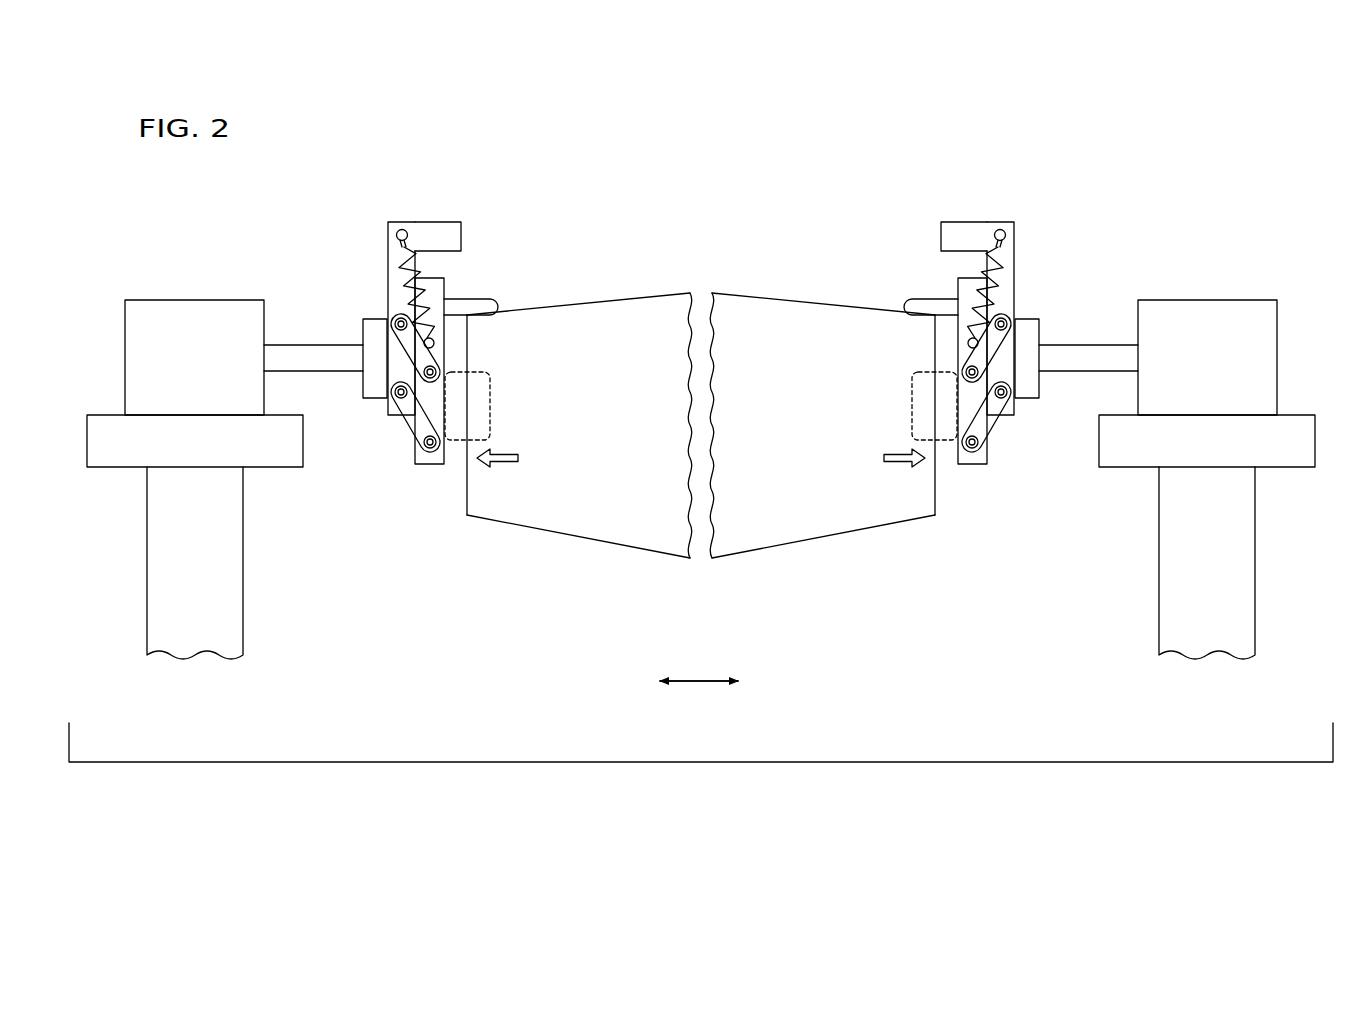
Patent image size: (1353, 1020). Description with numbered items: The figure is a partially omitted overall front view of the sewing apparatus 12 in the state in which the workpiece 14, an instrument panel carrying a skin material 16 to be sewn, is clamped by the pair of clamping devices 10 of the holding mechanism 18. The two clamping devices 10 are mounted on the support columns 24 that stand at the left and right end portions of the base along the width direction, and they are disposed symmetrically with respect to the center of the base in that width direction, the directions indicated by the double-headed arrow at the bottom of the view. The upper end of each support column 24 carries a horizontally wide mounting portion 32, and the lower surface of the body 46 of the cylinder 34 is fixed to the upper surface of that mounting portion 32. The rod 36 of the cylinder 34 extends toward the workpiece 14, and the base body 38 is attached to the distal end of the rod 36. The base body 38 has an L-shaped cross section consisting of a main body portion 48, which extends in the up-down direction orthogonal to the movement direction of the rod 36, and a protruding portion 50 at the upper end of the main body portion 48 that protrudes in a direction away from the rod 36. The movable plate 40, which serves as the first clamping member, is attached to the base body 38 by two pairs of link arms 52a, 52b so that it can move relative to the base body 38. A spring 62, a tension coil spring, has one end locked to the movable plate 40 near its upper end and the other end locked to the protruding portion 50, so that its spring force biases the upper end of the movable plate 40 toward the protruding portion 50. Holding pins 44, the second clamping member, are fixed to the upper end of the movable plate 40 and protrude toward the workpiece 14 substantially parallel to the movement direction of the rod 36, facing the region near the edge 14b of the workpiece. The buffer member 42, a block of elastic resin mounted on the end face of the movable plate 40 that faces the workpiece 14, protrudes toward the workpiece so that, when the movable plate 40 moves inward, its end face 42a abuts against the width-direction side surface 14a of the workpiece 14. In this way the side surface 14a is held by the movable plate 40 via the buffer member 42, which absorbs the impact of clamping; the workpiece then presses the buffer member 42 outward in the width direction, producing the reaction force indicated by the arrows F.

The clamping device 10 is at (281, 221).
The sewing apparatus 12 is at (1115, 140).
The workpiece 14 is at (702, 391).
The width-direction side surface 14a is at (465, 500).
The wheel tread edge 14b is at (507, 312).
The skin material 16 is at (756, 296).
The holding mechanism 18 is at (141, 619).
The support column 24 is at (223, 600).
The mounting portion 32 is at (98, 420).
The cylinder 34 is at (150, 298).
The rod 36 is at (300, 345).
The base body 38 is at (386, 238).
The movable plate 40 is at (423, 468).
The buffer member 42 is at (701, 406).
The end face (abutting surface) 42a is at (470, 401).
The holding pins 44 is at (479, 299).
The body 46 is at (208, 310).
The main body portion 48 is at (392, 289).
The protruding portion 50 is at (444, 221).
The link arm 52a is at (432, 358).
The link arm 52b is at (418, 421).
The spring 62 is at (392, 248).